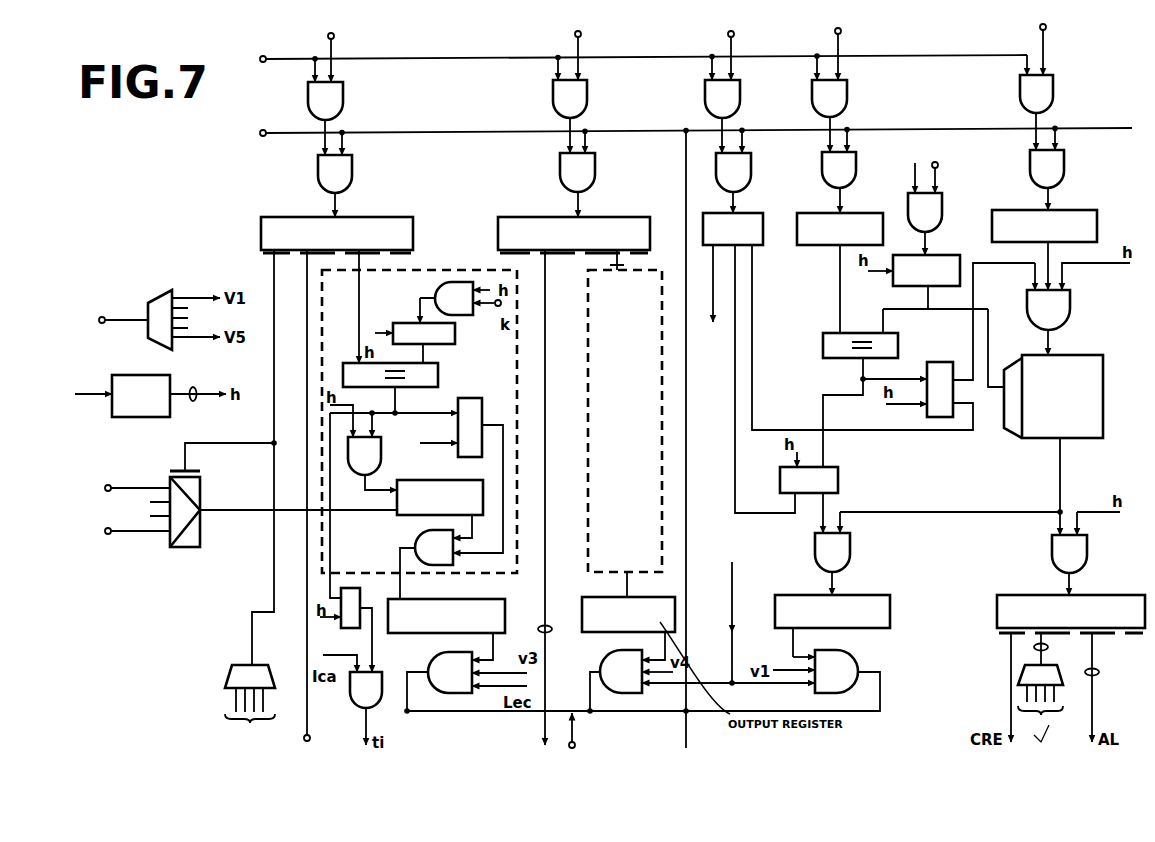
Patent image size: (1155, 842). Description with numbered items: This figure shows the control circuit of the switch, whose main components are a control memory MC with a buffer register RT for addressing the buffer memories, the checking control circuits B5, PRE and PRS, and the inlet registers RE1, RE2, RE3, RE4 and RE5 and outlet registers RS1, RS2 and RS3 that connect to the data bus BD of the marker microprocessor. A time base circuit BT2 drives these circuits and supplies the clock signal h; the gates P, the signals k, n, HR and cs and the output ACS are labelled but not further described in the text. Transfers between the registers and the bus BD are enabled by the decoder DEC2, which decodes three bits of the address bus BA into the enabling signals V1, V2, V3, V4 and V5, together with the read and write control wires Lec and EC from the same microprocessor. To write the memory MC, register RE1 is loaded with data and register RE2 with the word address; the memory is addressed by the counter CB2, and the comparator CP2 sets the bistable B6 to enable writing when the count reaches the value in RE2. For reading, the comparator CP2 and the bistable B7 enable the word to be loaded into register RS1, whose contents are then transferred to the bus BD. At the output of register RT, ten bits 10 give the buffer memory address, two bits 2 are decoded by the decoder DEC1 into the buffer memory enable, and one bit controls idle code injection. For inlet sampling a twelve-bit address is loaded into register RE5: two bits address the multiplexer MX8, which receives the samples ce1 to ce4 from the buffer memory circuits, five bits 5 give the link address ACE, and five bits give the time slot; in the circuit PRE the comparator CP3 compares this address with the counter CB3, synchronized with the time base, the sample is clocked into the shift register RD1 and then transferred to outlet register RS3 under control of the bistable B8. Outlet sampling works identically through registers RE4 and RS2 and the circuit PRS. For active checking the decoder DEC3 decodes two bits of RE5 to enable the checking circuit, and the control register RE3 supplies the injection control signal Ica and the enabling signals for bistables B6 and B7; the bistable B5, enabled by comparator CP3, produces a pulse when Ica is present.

The write control wire EC is at (628, 63).
The data bus BD is at (681, 135).
The enabling signal v1 V1 is at (1055, 48).
The enabling signal v2 V2 is at (850, 53).
The enabling signal v3 V3 is at (743, 53).
The enabling signal v4 V4 is at (590, 53).
The enabling signal v5 V5 is at (344, 55).
The AND gates P is at (705, 393).
The inlet register RE1 is at (1025, 164).
The inlet register RE2 is at (806, 267).
The control register RE3 is at (754, 211).
The inlet register RE4 is at (576, 216).
The inlet register RE5 is at (345, 216).
The counter CB2 is at (937, 258).
The counter CB3 is at (408, 318).
The comparator CP2 is at (829, 345).
The comparator CP3 is at (414, 373).
The bistable B5 is at (363, 604).
The bistable B6 is at (942, 370).
The bistable B7 is at (834, 475).
The bistable B8 is at (484, 419).
The shift register RD1 is at (440, 486).
The outlet register RS1 is at (868, 583).
The outlet register RS2 is at (654, 612).
The outlet register RS3 is at (466, 669).
The control memory MC is at (1053, 419).
The buffer register RT is at (1050, 614).
The decoder DEC1 is at (1003, 703).
The decoder DEC2 is at (158, 306).
The decoder DEC3 is at (216, 704).
The time base circuit BT2 is at (183, 415).
The multiplexer MX8 is at (187, 528).
The checking control circuit PRE is at (419, 399).
The checking control circuit PRS is at (604, 421).
The clock signal h is at (908, 169).
The signal k is at (943, 168).
The n-bit bus n is at (199, 379).
The address bus BA is at (121, 310).
The HR input HR is at (92, 384).
The sample input Ce1 ce1 is at (133, 477).
The sample input Ce4 ce4 is at (132, 545).
The address ACE is at (326, 499).
The ACS output ACS is at (525, 499).
The cs input cs is at (583, 732).
The read control wire Lec is at (732, 614).
The injection control signal Ica is at (712, 302).
The two-bit bus 2 is at (1049, 650).
The ten-bit bus 10 is at (1106, 675).
The five-bit bus 5 is at (550, 620).